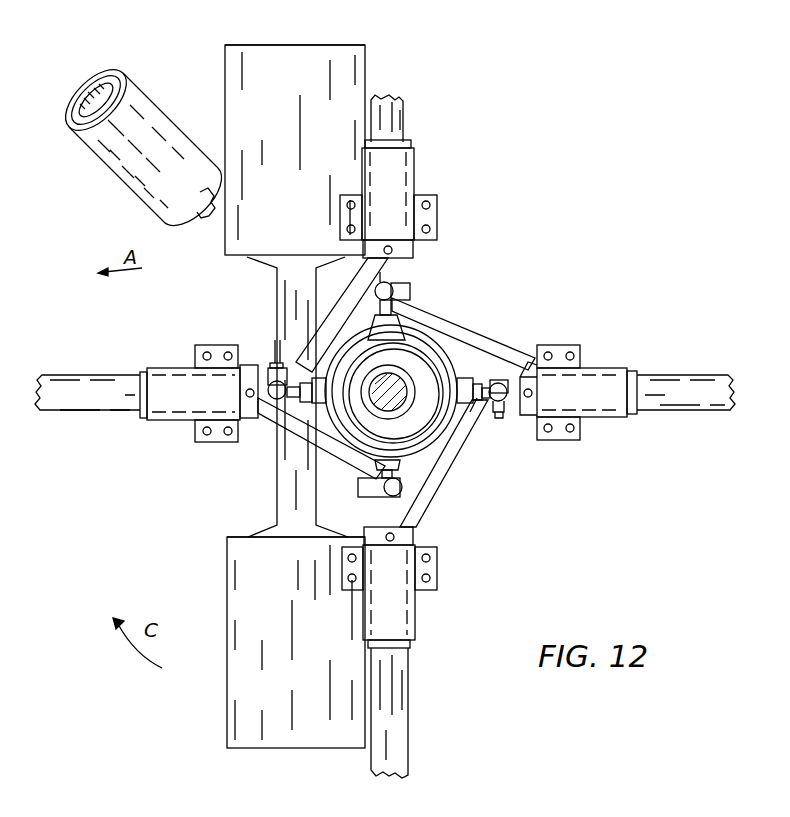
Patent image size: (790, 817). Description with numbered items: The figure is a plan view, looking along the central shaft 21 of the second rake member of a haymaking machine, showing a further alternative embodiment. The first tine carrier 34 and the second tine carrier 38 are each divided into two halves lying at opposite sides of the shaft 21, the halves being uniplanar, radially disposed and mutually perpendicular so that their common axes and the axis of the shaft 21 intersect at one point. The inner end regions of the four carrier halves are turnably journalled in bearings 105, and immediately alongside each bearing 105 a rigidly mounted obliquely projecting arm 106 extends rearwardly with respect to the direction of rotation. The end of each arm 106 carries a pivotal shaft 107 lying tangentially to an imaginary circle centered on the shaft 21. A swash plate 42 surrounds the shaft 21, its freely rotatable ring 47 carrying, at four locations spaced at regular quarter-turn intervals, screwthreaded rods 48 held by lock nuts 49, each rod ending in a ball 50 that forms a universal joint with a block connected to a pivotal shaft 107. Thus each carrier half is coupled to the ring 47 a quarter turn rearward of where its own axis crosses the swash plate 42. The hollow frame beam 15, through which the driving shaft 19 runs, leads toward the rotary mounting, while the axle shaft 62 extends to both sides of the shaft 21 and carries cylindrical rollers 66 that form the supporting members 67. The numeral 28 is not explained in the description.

The hollow frame beam 15 is at (97, 150).
The driving shaft 19 is at (206, 223).
The upwardly extending shaft 21 is at (412, 402).
The piston rod 28 is at (103, 400).
The first tine carrier 34 is at (398, 132).
The second tine carrier 38 is at (700, 354).
The swash plate 42 is at (347, 448).
The ring 47 is at (420, 336).
The screwthreaded rod 48 is at (482, 384).
The lock nut 49 is at (469, 420).
The ball 50 is at (395, 290).
The axle shaft 62 is at (278, 293).
The cylindrical roller 66 is at (242, 103).
The supporting member 67 is at (232, 62).
The bearing 105 is at (405, 182).
The obliquely projecting arm 106 is at (348, 262).
The pivotal shaft 107 is at (412, 297).